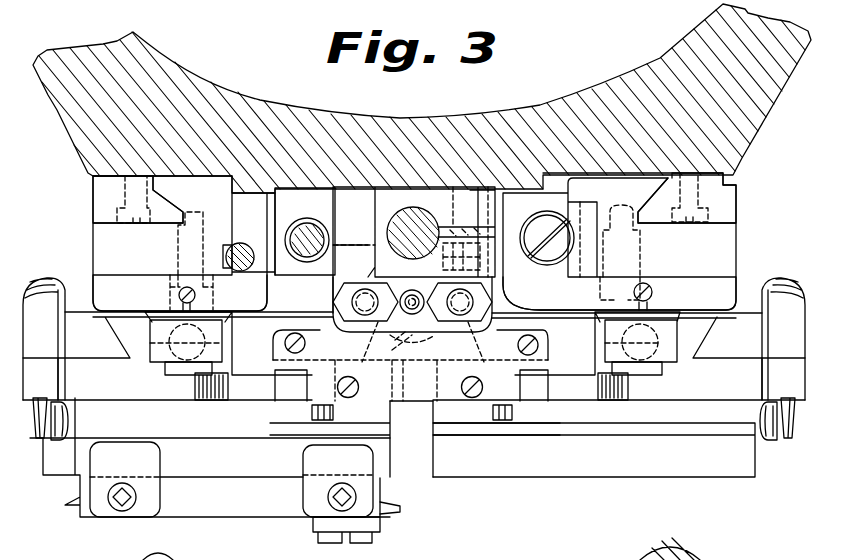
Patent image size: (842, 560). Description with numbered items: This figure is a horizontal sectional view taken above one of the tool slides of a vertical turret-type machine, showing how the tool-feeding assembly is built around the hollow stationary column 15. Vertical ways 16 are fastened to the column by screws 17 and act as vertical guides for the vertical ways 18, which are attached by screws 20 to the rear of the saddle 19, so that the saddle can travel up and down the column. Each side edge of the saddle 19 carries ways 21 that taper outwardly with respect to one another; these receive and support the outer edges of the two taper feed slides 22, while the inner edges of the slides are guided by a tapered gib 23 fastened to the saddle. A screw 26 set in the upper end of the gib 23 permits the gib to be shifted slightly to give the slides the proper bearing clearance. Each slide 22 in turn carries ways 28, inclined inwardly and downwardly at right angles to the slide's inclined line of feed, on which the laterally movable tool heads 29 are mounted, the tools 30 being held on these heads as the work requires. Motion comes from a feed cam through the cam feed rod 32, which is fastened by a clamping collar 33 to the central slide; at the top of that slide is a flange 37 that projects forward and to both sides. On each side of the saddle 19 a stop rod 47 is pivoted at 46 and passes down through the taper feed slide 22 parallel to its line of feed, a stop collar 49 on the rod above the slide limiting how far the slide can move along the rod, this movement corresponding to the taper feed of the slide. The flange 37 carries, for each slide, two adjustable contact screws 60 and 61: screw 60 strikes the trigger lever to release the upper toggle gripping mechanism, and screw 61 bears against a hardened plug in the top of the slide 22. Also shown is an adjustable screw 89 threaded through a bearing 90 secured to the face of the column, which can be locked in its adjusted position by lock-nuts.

The hollow stationary column 15 is at (275, 90).
The vertical ways 16 is at (100, 204).
The screws 17 is at (117, 181).
The vertical ways 18 is at (107, 244).
The saddle 19 is at (110, 290).
The screws 20 is at (182, 253).
The ways 21 is at (414, 339).
The taper feed slides 22 is at (414, 379).
The tapered gib 23 is at (403, 401).
The screw 26 is at (413, 292).
The ways 28 is at (38, 437).
The tool heads 29 is at (392, 470).
The tools 30 is at (402, 512).
The cam feed rod 32 is at (427, 204).
The clamping collar 33 is at (386, 203).
The flange 37 is at (420, 395).
The pivot 46 is at (182, 350).
The stop rod 47 is at (160, 322).
The stop collar 49 is at (186, 372).
The contact screw 60 is at (307, 345).
The contact screw 61 is at (338, 387).
The adjustable screw 89 is at (313, 222).
The bearing 90 is at (286, 233).